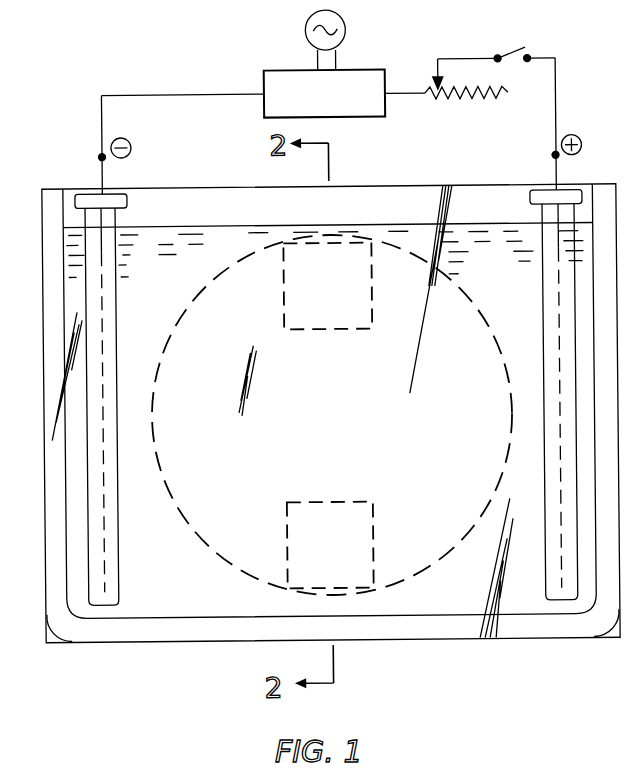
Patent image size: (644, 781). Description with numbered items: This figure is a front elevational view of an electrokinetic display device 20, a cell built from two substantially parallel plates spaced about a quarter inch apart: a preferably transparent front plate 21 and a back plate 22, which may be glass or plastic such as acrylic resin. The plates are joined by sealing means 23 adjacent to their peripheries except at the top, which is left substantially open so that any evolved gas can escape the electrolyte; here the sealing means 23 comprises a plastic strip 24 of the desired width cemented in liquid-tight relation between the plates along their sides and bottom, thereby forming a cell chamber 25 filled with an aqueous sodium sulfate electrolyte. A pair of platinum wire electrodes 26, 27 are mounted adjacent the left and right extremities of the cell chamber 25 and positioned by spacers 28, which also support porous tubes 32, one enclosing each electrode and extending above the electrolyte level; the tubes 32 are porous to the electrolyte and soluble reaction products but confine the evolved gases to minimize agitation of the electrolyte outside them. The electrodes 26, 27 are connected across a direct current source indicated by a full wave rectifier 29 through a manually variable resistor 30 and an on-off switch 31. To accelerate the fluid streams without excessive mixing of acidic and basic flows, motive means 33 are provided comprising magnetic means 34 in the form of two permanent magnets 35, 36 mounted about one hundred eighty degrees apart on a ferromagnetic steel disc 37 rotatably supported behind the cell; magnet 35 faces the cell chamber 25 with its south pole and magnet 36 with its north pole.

The electrokinetic display device 20 is at (491, 125).
The front plate 21 is at (507, 263).
The back plate 22 is at (638, 218).
The sealing means 23 is at (494, 644).
The plastic strip 24 is at (46, 348).
The cell chamber 25 is at (370, 200).
The electrode 26 is at (108, 174).
The electrode 27 is at (561, 175).
The spacers 28 is at (89, 199).
The full wave rectifier 29 is at (355, 70).
The manually variable resistor 30 is at (509, 97).
The on-off switch 31 is at (533, 50).
The porous tubes 32 is at (120, 554).
The motive means 33 is at (636, 272).
The magnetic means 34 is at (575, 362).
The permanent magnet 35 is at (348, 331).
The permanent magnet 36 is at (360, 501).
The disc 37 is at (215, 561).